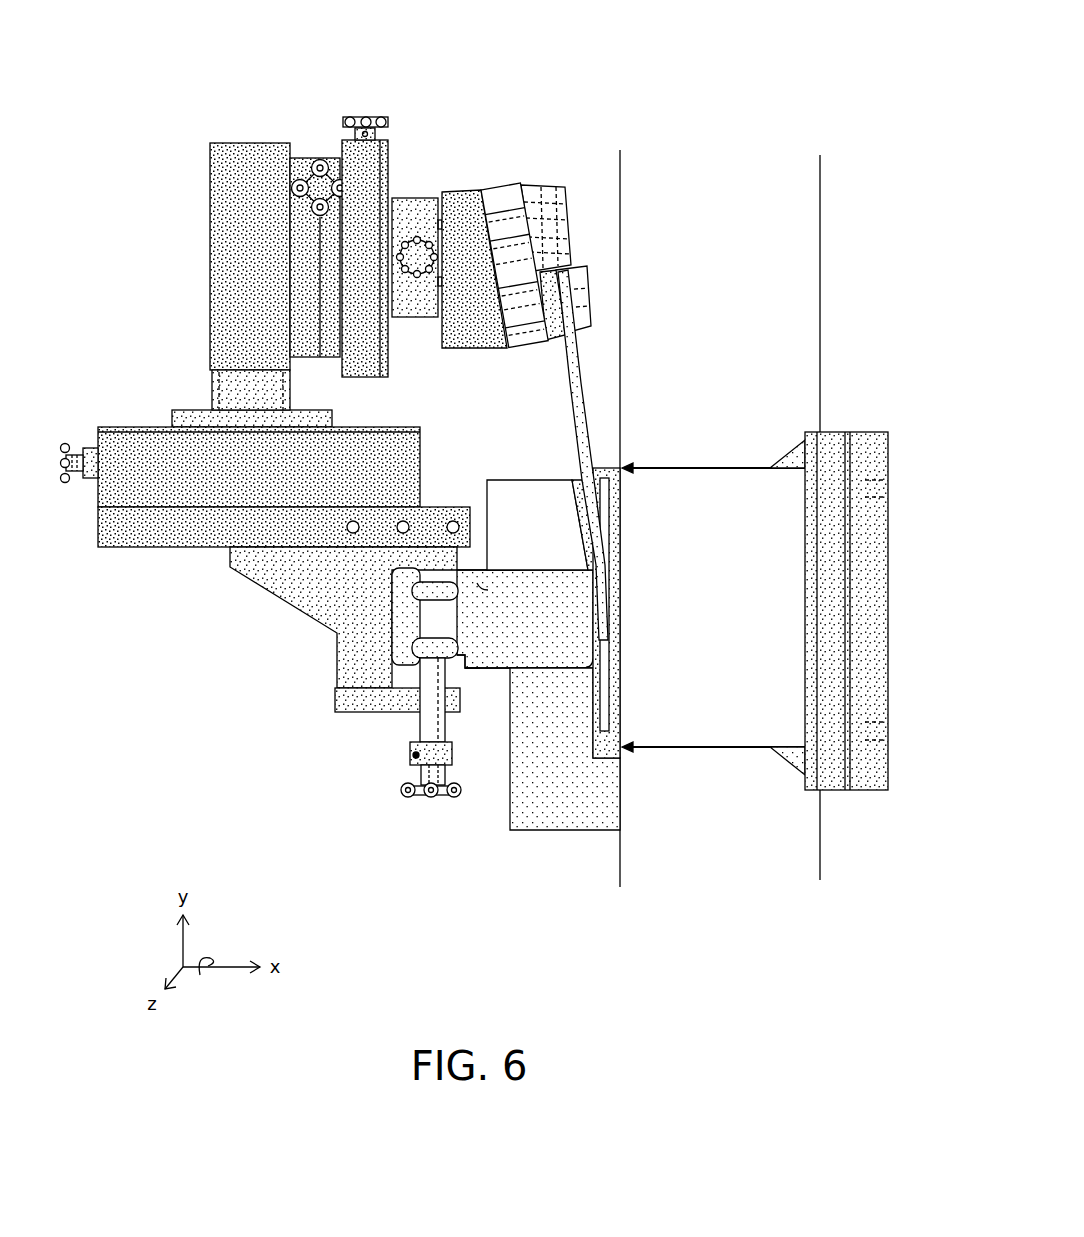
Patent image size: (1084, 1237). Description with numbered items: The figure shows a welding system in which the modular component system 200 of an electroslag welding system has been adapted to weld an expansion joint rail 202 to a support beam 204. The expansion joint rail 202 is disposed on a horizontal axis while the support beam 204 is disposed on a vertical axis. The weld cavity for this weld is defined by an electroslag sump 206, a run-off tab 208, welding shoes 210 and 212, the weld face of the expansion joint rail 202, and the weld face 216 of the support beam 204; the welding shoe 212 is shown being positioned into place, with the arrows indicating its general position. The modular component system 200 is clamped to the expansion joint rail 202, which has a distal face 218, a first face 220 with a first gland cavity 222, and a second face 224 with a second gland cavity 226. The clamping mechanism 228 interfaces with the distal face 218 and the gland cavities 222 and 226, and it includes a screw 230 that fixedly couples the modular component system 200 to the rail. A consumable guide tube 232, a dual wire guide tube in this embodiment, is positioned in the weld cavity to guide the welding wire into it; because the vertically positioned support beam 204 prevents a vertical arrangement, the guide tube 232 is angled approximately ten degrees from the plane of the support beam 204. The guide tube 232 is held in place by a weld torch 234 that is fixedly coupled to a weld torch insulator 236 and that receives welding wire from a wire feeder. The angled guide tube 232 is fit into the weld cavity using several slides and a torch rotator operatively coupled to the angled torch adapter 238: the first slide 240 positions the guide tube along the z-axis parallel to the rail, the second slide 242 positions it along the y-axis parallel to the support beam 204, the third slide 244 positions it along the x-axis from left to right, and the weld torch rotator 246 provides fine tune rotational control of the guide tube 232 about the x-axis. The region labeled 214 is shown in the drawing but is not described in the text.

The modular component system 200 is at (260, 72).
The expansion joint rail 202 is at (510, 655).
The support beam 204 is at (630, 867).
The electroslag sump 206 is at (515, 808).
The run-off tab 208 is at (532, 490).
The welding shoe 210 is at (612, 470).
The welding shoe 212 is at (870, 430).
The slide body 214 is at (590, 603).
The weld face of the support beam 216 is at (622, 608).
The distal face 218 is at (392, 627).
The first face 220 is at (490, 591).
The first gland cavity 222 is at (447, 600).
The second face 224 is at (470, 652).
The second gland cavity 226 is at (423, 636).
The clamping mechanism 228 is at (308, 590).
The screw 230 is at (415, 772).
The consumable guide tube 232 is at (572, 390).
The weld torch 234 is at (579, 268).
The weld torch insulator 236 is at (492, 190).
The angled torch adapter 238 is at (457, 190).
The first slide 240 is at (403, 197).
The second slide 242 is at (372, 115).
The third slide 244 is at (157, 425).
The weld torch rotator 246 is at (296, 157).